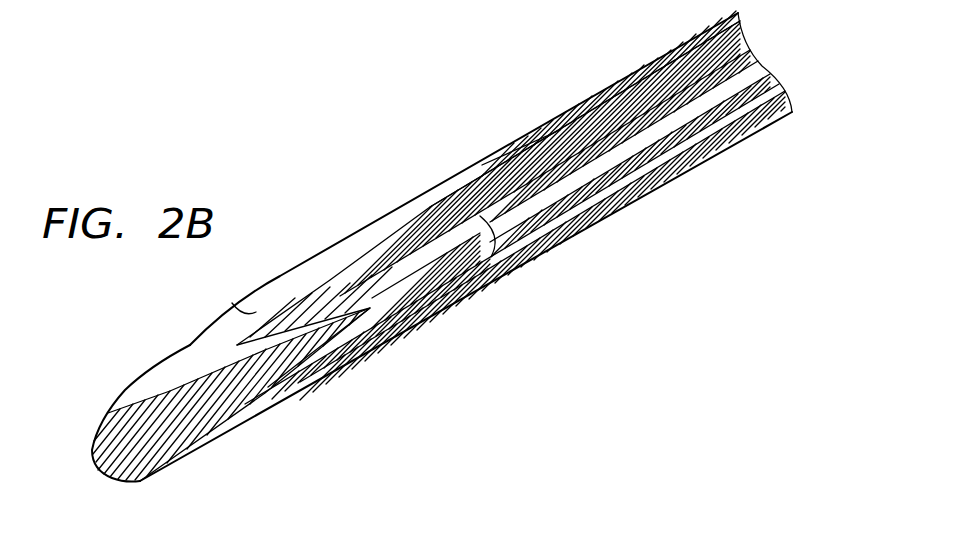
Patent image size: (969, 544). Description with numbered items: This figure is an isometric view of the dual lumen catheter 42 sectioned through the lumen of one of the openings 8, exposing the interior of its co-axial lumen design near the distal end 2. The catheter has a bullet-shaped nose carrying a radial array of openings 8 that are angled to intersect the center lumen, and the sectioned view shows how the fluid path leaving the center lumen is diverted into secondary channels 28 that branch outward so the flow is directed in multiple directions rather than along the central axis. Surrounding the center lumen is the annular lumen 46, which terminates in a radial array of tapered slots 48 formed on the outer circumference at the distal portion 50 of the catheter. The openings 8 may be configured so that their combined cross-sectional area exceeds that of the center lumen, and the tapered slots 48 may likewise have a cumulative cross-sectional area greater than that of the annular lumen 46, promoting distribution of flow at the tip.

The distal end 2 is at (93, 462).
The openings 8 is at (163, 372).
The secondary channels 28 is at (340, 292).
The dual lumen catheter 42 is at (285, 243).
The annular lumen 46 is at (675, 75).
The tapered slots 48 is at (533, 138).
The distal portion 50 is at (683, 247).